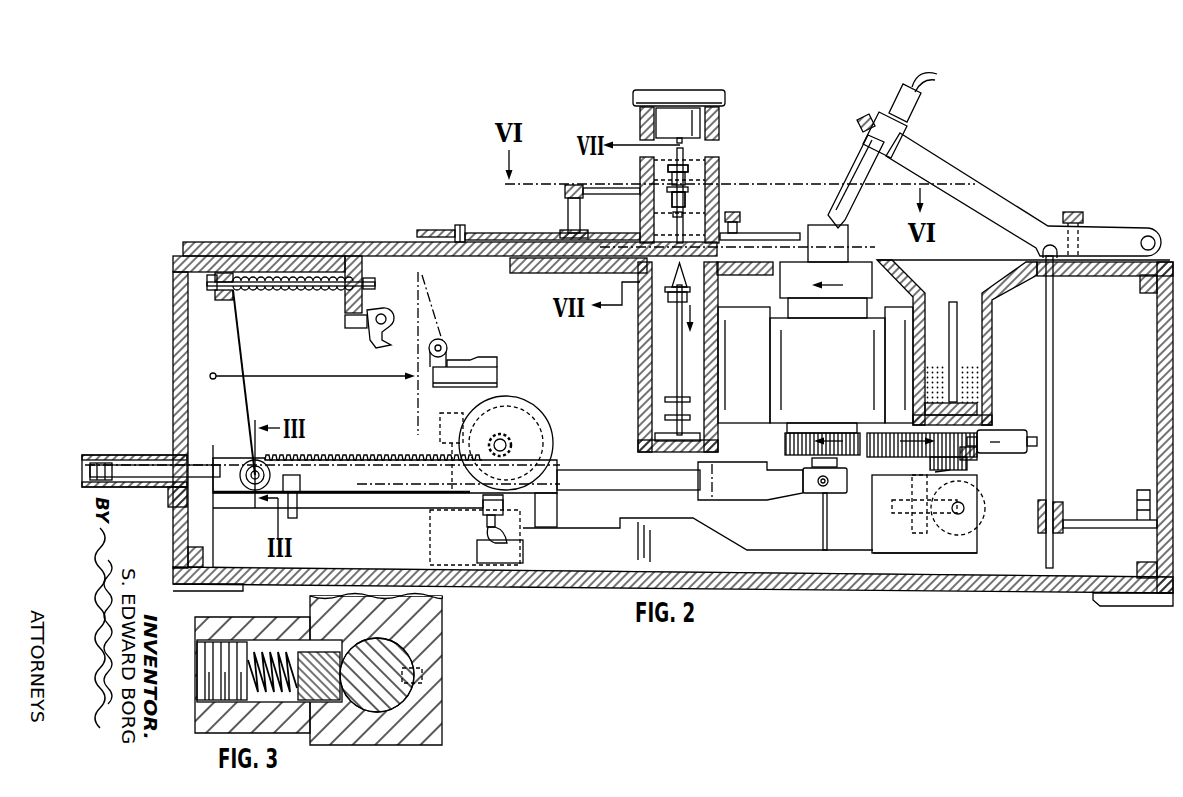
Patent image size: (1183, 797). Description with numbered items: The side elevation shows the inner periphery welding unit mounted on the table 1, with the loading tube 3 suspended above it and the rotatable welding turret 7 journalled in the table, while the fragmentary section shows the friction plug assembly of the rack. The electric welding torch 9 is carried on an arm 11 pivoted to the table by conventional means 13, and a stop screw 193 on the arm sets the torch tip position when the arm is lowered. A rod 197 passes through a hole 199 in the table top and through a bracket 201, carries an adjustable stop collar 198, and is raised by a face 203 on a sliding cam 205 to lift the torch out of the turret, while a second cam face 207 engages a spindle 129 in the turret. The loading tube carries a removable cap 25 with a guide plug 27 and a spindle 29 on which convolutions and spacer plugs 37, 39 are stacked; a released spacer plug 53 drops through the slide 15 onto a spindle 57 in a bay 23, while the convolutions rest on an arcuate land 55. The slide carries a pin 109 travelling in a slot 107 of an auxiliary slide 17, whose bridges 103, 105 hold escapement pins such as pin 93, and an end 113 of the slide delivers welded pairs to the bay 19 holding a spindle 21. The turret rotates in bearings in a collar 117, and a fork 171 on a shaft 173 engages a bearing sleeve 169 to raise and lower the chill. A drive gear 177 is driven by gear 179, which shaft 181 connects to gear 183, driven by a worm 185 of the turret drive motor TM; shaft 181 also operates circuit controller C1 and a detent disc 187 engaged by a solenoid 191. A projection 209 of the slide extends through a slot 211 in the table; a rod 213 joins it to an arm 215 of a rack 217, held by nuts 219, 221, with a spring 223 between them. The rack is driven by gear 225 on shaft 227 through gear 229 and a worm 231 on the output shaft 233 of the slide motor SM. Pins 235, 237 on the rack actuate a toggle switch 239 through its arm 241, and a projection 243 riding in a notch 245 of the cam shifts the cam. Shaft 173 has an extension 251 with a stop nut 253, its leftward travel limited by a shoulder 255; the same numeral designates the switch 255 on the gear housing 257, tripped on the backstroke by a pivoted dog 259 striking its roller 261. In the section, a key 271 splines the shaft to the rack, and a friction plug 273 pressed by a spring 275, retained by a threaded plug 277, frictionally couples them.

In FIG. 2, the table 1 is at (876, 604).
In FIG. 2, the loading tube 3 is at (720, 129).
In FIG. 2, the welding turret 7 is at (853, 228).
In FIG. 2, the electric welding torch 9 is at (848, 175).
In FIG. 2, the arm 11 is at (982, 182).
In FIG. 2, the pivot means 13 is at (1155, 226).
In FIG. 2, the slide 15 is at (272, 242).
In FIG. 2, the auxiliary slide 17 is at (437, 230).
In FIG. 2, the bay 19 is at (926, 306).
In FIG. 2, the spindle 21 is at (957, 321).
In FIG. 2, the bay 23 is at (638, 351).
In FIG. 2, the removable cap 25 is at (725, 103).
In FIG. 2, the guide plug 27 is at (640, 118).
In FIG. 2, the spindle 29 is at (684, 209).
In FIG. 2, the spacer plug 37 is at (672, 171).
In FIG. 2, the spacer plug 39 is at (672, 196).
In FIG. 2, the spacer plug 53 is at (708, 283).
In FIG. 2, the land 55 is at (747, 233).
In FIG. 2, the spindle 57 is at (712, 307).
In FIG. 2, the pin 93 is at (595, 191).
In FIG. 2, the bridge 103 is at (565, 191).
In FIG. 2, the bridge 105 is at (737, 213).
In FIG. 2, the slot 107 is at (525, 233).
In FIG. 2, the pin 109 is at (462, 231).
In FIG. 2, the end of slide 113 is at (750, 275).
In FIG. 2, the collar 117 is at (875, 318).
In FIG. 2, the spindle 129 is at (822, 528).
In FIG. 2, the bearing sleeve 169 is at (810, 494).
In FIG. 2, the fork 171 is at (754, 488).
In FIG. 2, the shaft 173 is at (565, 489).
In FIG. 3, the shaft 173 is at (393, 695).
In FIG. 2, the drive gear 177 is at (786, 446).
In FIG. 2, the gear 179 is at (968, 460).
In FIG. 2, the shaft 181 is at (910, 520).
In FIG. 2, the gear 183 is at (912, 494).
In FIG. 2, the worm 185 is at (976, 526).
In FIG. 2, the disc 187 is at (882, 438).
In FIG. 2, the solenoid 191 is at (1010, 432).
In FIG. 2, the stop screw 193 is at (1075, 212).
In FIG. 2, the rod 197 is at (1053, 366).
In FIG. 2, the stop collar 198 is at (1062, 505).
In FIG. 2, the hole 199 is at (1064, 277).
In FIG. 2, the bracket 201 is at (1090, 524).
In FIG. 2, the cam face 203 is at (976, 556).
In FIG. 2, the cam 205 is at (710, 558).
In FIG. 2, the second cam face 207 is at (718, 530).
In FIG. 2, the projection 209 is at (344, 321).
In FIG. 2, the slot 211 is at (510, 268).
In FIG. 2, the rod 213 is at (278, 297).
In FIG. 2, the arm 215 is at (232, 338).
In FIG. 2, the rack 217 is at (334, 440).
In FIG. 3, the rack 217 is at (442, 725).
In FIG. 2, the nut 219 is at (207, 294).
In FIG. 2, the nut 221 is at (375, 281).
In FIG. 2, the spring 223 is at (331, 297).
In FIG. 2, the gear 225 is at (512, 446).
In FIG. 2, the shaft 227 is at (530, 428).
In FIG. 2, the gear 229 is at (527, 397).
In FIG. 2, the worm 231 is at (435, 453).
In FIG. 2, the output shaft 233 is at (417, 509).
In FIG. 2, the pin 235 is at (299, 512).
In FIG. 2, the pin 237 is at (508, 528).
In FIG. 2, the toggle switch 239 is at (537, 557).
In FIG. 2, the arm 241 is at (485, 522).
In FIG. 2, the projection 243 is at (557, 512).
In FIG. 2, the notch 245 is at (622, 518).
In FIG. 2, the extension 251 is at (138, 465).
In FIG. 2, the stop nut 253 is at (107, 460).
In FIG. 2, the shoulder 255 is at (470, 352).
In FIG. 2, the housing 257 is at (553, 453).
In FIG. 2, the pivoted dog 259 is at (370, 347).
In FIG. 2, the actuating roller 261 is at (445, 341).
In FIG. 3, the key 271 is at (423, 670).
In FIG. 3, the friction plug 273 is at (320, 653).
In FIG. 3, the spring 275 is at (253, 656).
In FIG. 2, the threaded plug 277 is at (240, 488).
In FIG. 3, the threaded plug 277 is at (208, 660).
In FIG. 2, the circuit controller C1 is at (970, 474).
In FIG. 2, the turret drive motor TM is at (986, 507).
In FIG. 2, the slide motor SM is at (430, 545).